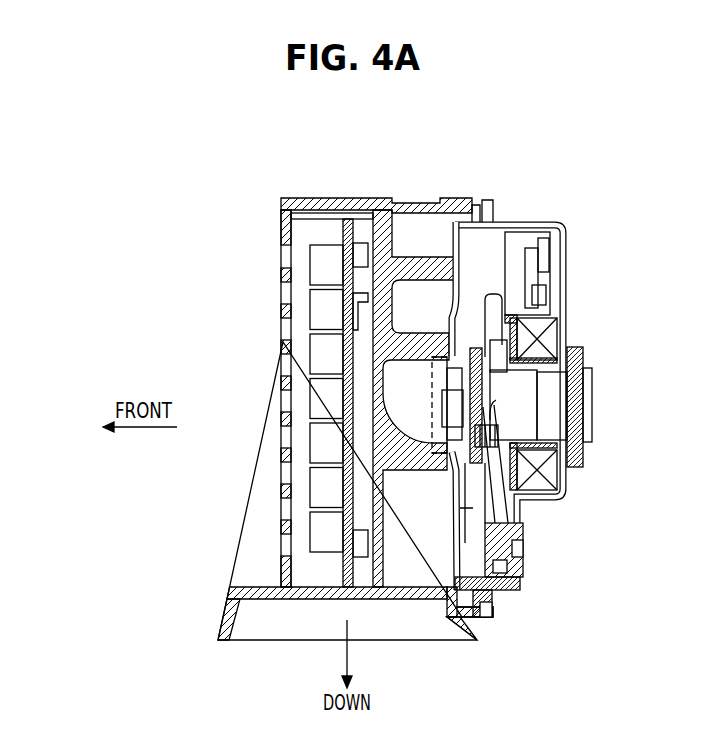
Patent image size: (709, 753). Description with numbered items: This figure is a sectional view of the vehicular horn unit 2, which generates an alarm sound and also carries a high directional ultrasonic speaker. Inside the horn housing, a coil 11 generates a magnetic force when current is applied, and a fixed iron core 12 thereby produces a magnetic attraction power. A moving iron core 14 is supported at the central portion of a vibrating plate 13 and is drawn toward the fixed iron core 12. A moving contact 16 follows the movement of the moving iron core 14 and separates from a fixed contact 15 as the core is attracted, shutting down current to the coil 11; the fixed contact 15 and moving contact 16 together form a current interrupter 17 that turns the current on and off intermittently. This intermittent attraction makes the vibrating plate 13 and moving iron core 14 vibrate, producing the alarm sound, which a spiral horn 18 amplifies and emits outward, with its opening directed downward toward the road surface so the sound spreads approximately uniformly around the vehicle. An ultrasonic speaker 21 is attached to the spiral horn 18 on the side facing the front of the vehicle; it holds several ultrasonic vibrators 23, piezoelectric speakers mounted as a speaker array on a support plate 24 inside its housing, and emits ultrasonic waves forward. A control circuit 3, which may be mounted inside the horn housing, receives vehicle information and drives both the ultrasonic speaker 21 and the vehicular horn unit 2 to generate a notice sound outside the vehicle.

The vehicular horn unit 2 is at (413, 190).
The control circuit 3 is at (548, 236).
The coil 11 is at (548, 337).
The fixed iron core 12 is at (558, 393).
The vibrating plate 13 is at (462, 303).
The moving iron core 14 is at (523, 421).
The fixed contact 15 is at (618, 487).
The moving contact 16 is at (563, 477).
The current interrupter 17 is at (557, 530).
The spiral horn 18 is at (413, 628).
The ultrasonic speaker 21 is at (373, 187).
The ultrasonic vibrators 23 is at (322, 348).
The support plate 24 is at (327, 402).